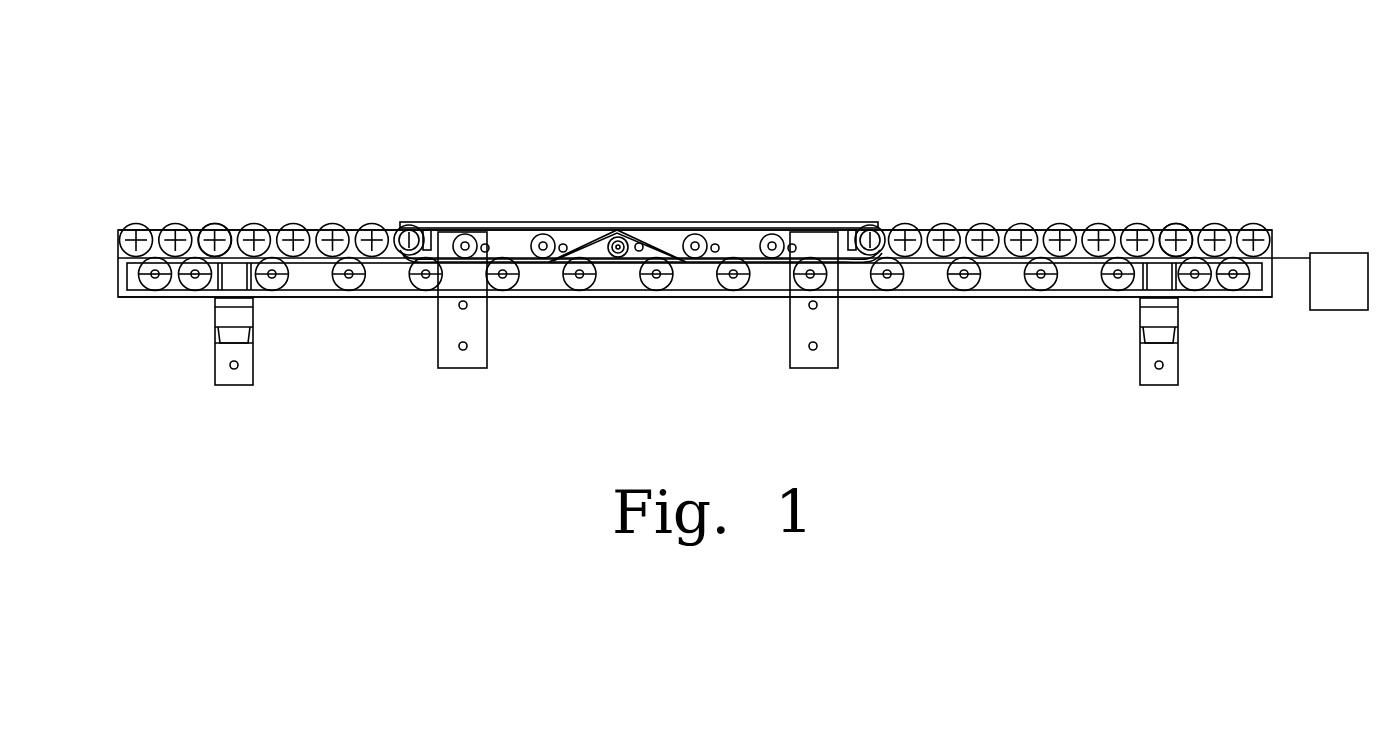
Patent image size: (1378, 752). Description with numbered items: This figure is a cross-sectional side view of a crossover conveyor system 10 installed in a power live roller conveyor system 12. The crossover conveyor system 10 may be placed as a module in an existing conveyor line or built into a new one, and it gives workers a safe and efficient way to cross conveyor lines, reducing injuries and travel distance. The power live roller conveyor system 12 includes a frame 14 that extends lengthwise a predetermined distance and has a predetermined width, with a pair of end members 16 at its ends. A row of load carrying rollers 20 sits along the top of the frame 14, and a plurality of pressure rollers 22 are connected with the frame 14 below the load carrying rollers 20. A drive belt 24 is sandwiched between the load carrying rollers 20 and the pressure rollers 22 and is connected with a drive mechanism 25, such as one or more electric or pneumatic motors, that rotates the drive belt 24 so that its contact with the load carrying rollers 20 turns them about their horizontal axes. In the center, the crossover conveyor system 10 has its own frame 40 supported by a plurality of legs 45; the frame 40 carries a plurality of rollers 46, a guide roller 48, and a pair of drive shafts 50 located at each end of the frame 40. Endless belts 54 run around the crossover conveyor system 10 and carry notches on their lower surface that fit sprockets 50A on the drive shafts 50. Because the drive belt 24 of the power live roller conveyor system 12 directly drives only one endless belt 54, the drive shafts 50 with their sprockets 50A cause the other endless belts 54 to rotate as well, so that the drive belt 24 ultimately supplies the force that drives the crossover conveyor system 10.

The crossover conveyor system 10 is at (662, 140).
The power live roller conveyor system 12 is at (268, 196).
The frame 14 is at (314, 228).
The end members 16 is at (118, 254).
The load carrying rollers 20 is at (214, 224).
The pressure rollers 22 is at (283, 282).
The drive belt 24 is at (386, 297).
The drive mechanism 25 is at (1340, 253).
The frame 40 is at (433, 231).
The legs 45 is at (487, 325).
The rollers 46 is at (536, 236).
The guide roller 48 is at (612, 236).
The drive shafts 50 is at (400, 229).
The sprockets 50A is at (413, 226).
The endless belts 54 is at (727, 222).